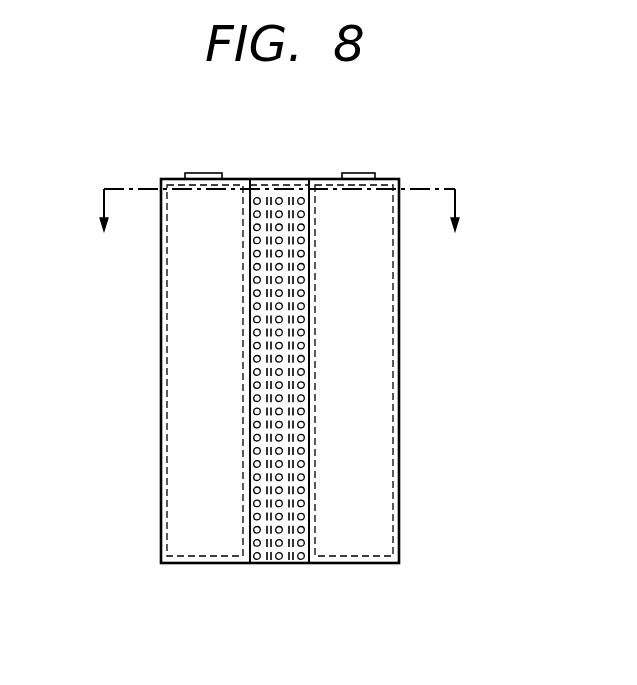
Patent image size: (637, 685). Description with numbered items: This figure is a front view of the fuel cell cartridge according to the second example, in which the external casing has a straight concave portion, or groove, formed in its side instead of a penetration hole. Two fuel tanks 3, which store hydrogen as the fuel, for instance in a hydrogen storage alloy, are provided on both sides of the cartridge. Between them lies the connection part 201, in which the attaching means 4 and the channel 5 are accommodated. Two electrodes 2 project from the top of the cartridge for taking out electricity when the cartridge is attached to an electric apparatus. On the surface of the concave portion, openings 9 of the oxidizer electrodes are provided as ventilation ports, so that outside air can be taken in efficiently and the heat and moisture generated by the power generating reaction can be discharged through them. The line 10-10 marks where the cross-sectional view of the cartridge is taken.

The electrode 2 is at (201, 173).
The fuel tank 3 is at (182, 331).
The attaching means 4 is at (229, 180).
The channel 5 is at (292, 180).
The openings (ventilation ports) 9 is at (302, 559).
The line 10- 10 is at (280, 232).
The connection part 201 is at (385, 181).